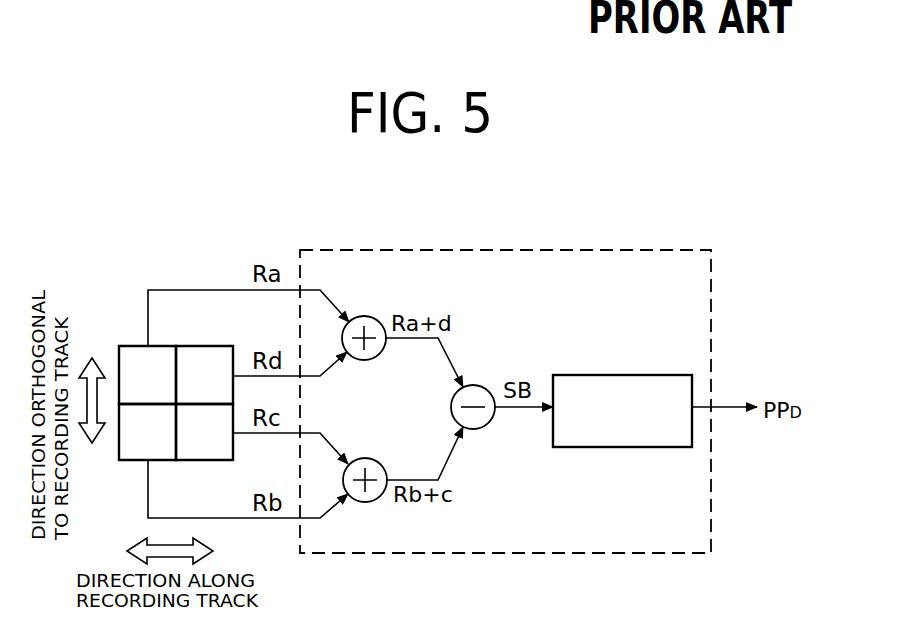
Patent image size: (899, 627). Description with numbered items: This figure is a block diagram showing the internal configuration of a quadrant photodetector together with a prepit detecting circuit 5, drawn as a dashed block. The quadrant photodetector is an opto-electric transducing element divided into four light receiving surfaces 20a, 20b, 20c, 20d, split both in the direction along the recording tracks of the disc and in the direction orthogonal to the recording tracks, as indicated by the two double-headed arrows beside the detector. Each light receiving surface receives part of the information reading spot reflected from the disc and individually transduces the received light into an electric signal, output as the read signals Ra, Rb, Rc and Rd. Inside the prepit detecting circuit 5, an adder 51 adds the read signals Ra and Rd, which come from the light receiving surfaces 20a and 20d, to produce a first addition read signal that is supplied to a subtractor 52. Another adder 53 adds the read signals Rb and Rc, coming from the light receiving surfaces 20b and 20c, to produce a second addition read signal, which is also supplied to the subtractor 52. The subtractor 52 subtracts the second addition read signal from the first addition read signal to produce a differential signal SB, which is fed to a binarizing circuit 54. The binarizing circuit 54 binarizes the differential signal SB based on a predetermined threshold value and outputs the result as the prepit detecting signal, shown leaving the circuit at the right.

The prepit detecting circuit 5 is at (640, 250).
The light receiving surface 20a is at (147, 375).
The light receiving surface 20b is at (147, 432).
The light receiving surface 20c is at (204, 432).
The light receiving surface 20d is at (204, 375).
The adder 51 is at (370, 316).
The subtractor 52 is at (480, 385).
The adder 53 is at (372, 458).
The binarizing circuit 54 is at (652, 375).